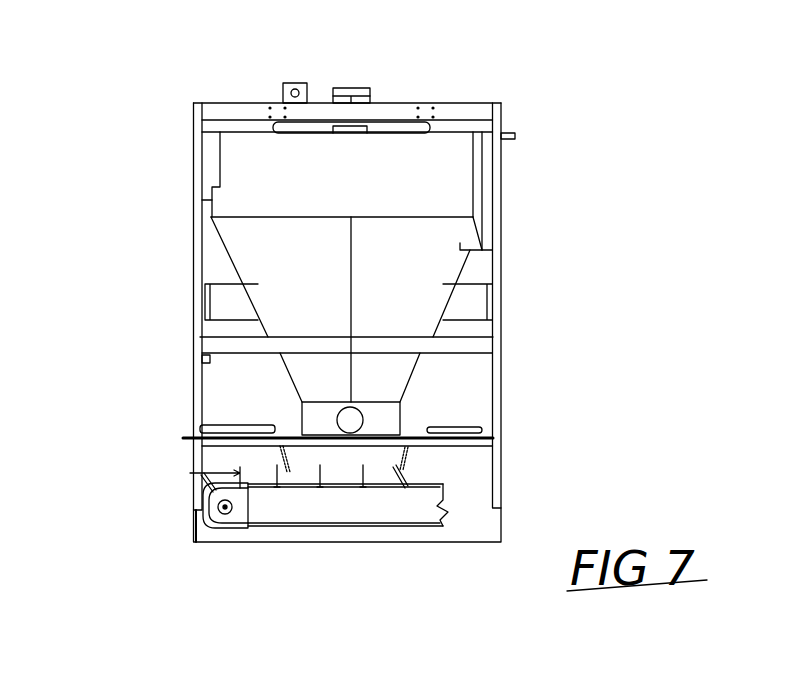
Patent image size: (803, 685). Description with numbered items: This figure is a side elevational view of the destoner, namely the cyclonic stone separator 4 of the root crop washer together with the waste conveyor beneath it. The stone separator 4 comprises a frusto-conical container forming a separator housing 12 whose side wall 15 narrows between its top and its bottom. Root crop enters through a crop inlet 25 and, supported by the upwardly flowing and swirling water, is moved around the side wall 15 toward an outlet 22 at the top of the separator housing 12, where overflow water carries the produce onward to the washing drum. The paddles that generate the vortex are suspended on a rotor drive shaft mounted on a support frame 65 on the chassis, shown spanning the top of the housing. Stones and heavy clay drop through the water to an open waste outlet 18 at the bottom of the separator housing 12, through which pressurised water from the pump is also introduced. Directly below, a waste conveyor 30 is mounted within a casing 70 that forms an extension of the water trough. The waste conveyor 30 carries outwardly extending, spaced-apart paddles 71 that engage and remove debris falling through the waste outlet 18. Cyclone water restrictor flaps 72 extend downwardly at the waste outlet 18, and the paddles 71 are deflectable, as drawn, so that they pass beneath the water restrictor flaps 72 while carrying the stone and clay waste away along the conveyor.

The support frame 65 is at (470, 108).
The crop inlet 25 is at (213, 163).
The outlet 22 is at (482, 193).
The stone separator 4 is at (220, 247).
The side wall 15 is at (410, 293).
The separator housing 12 is at (250, 300).
The waste outlet 18 is at (400, 415).
The cyclone water restrictor flaps 72 is at (280, 457).
The waste conveyor 30 is at (300, 525).
The paddles 71 is at (357, 473).
The casing 70 is at (468, 527).